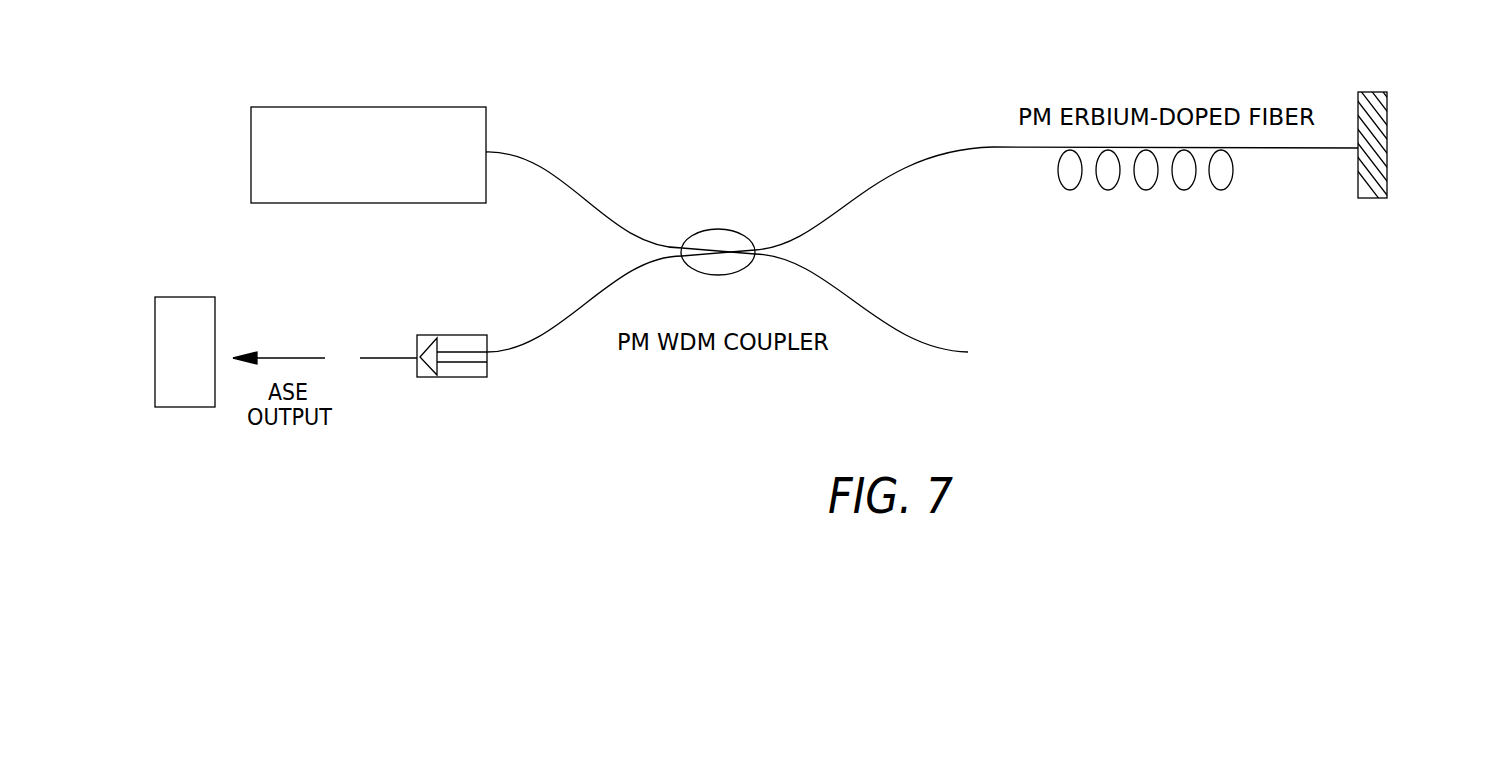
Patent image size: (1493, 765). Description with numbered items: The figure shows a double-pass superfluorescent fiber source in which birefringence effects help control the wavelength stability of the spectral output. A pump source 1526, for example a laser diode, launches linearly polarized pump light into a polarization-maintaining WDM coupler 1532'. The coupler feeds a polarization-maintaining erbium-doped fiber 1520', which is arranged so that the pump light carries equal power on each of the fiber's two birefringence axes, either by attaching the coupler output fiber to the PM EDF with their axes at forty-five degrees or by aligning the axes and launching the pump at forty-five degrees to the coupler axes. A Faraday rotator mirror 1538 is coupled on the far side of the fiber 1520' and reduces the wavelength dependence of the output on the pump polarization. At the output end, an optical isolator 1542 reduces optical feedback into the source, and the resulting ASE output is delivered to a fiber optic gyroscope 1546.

The pump source 1526 is at (367, 106).
The polarization-maintaining WDM coupler 1532' is at (730, 208).
The polarization-maintaining erbium-doped fiber 1520' is at (1145, 211).
The Faraday rotator mirror 1538 is at (1370, 198).
The fiber optic gyroscope 1546 is at (183, 408).
The optical isolator 1542 is at (443, 452).